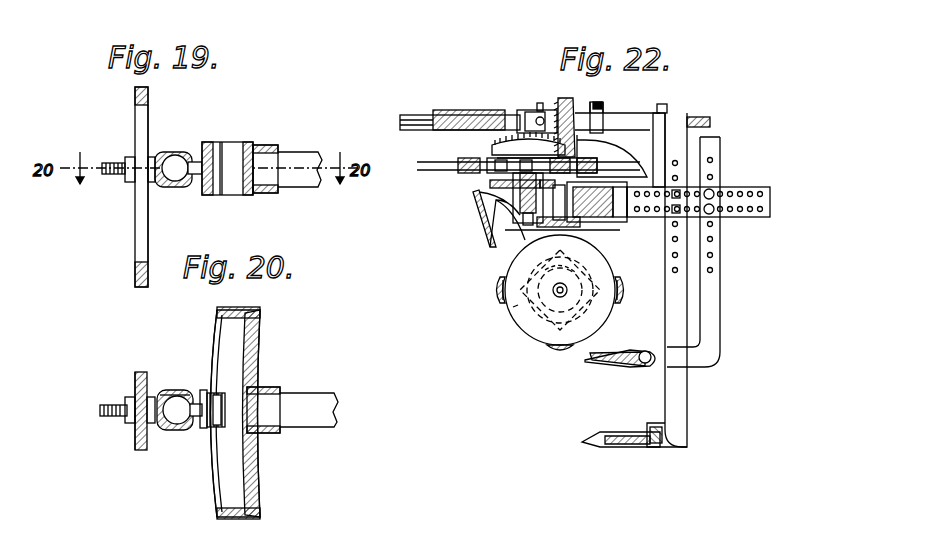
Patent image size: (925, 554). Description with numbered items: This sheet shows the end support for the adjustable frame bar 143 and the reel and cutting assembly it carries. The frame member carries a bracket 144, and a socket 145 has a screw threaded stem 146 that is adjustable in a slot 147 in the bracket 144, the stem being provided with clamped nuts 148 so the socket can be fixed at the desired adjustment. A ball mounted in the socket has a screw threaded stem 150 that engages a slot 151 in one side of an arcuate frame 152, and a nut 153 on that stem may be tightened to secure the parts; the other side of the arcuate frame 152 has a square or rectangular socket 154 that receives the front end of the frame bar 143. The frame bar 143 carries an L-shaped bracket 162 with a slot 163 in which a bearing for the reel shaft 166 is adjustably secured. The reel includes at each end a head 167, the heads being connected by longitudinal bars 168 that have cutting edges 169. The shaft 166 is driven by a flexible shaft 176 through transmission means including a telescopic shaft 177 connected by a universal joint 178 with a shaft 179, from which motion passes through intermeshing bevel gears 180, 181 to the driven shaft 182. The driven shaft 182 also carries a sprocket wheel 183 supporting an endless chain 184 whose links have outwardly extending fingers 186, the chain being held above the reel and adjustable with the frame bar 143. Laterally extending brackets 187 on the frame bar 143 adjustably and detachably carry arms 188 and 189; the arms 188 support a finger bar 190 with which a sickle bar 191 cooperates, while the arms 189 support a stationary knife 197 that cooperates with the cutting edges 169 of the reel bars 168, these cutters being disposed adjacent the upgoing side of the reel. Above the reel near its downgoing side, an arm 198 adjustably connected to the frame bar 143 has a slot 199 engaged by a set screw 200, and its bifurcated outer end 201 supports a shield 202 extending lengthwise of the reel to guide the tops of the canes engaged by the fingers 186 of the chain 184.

In FIG. 19, the frame bar 143 is at (310, 157).
In FIG. 20, the frame bar 143 is at (323, 398).
In FIG. 22, the frame bar 143 is at (613, 218).
In FIG. 19, the bracket 144 is at (135, 276).
In FIG. 20, the bracket 144 is at (140, 450).
In FIG. 19, the socket 145 is at (183, 190).
In FIG. 20, the socket 145 is at (182, 393).
In FIG. 19, the screw threaded stem 146 is at (115, 162).
In FIG. 20, the screw threaded stem 146 is at (103, 413).
In FIG. 19, the slot 147 is at (146, 123).
In FIG. 20, the slot 147 is at (138, 388).
In FIG. 19, the clamped nuts 148 is at (132, 156).
In FIG. 20, the clamped nuts 148 is at (153, 393).
In FIG. 19, the screw threaded stem 150 is at (227, 150).
In FIG. 20, the screw threaded stem 150 is at (228, 412).
In FIG. 20, the slot 151 is at (213, 352).
In FIG. 19, the arcuate frame 152 is at (223, 190).
In FIG. 20, the arcuate frame 152 is at (258, 317).
In FIG. 19, the nut 153 is at (225, 170).
In FIG. 20, the nut 153 is at (218, 397).
In FIG. 19, the socket 154 is at (297, 135).
In FIG. 20, the socket 154 is at (273, 388).
In FIG. 22, the L-shaped bracket 162 is at (621, 250).
In FIG. 22, the slot 163 is at (555, 296).
In FIG. 22, the shaft 166 is at (549, 362).
In FIG. 22, the head 167 is at (513, 308).
In FIG. 22, the longitudinal bars 168 is at (500, 293).
In FIG. 22, the cutting edges 169 is at (507, 305).
In FIG. 22, the flexible shaft 176 is at (503, 250).
In FIG. 22, the telescopic shaft 177 is at (493, 114).
In FIG. 22, the universal joint 178 is at (540, 104).
In FIG. 19, the shaft 179 is at (170, 184).
In FIG. 20, the shaft 179 is at (182, 416).
In FIG. 22, the shaft 179 is at (695, 118).
In FIG. 22, the bevel gear 180 is at (580, 88).
In FIG. 22, the bevel gear 181 is at (500, 152).
In FIG. 22, the driven shaft 182 is at (502, 187).
In FIG. 22, the sprocket wheel 183 is at (457, 162).
In FIG. 22, the endless chain 184 is at (500, 180).
In FIG. 22, the fingers 186 is at (418, 165).
In FIG. 22, the laterally extending brackets 187 is at (752, 190).
In FIG. 22, the arms 188 is at (680, 393).
In FIG. 22, the arms 189 is at (712, 309).
In FIG. 22, the finger bar 190 is at (643, 441).
In FIG. 22, the sickle bar 191 is at (642, 431).
In FIG. 22, the stationary knife 197 is at (613, 351).
In FIG. 22, the arm 198 is at (557, 195).
In FIG. 22, the slot 199 is at (577, 231).
In FIG. 22, the set screw 200 is at (580, 262).
In FIG. 22, the bifurcated end 201 is at (490, 247).
In FIG. 22, the shield 202 is at (480, 231).